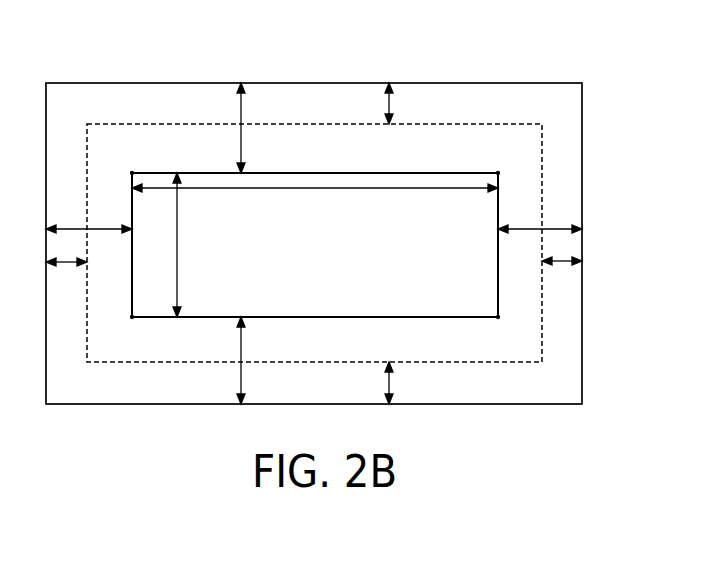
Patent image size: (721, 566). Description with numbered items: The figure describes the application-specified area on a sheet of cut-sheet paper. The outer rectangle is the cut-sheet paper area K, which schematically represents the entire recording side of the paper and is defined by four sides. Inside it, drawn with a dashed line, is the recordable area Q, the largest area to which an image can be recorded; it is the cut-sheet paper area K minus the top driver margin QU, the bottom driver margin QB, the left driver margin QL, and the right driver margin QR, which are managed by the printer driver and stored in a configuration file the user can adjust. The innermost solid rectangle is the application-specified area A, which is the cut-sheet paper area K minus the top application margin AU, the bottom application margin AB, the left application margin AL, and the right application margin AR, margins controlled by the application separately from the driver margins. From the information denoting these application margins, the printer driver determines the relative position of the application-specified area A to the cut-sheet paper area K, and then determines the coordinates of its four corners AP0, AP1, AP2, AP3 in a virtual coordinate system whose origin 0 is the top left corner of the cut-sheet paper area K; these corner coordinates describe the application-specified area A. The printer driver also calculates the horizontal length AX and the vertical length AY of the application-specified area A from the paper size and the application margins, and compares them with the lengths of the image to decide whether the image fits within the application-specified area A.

The cut-sheet paper area K is at (113, 82).
The recordable area Q is at (143, 123).
The application-specified area A is at (347, 172).
The origin 0 is at (46, 82).
The corner of the application-specified area AP0 is at (132, 172).
The corner of the application-specified area AP1 is at (498, 172).
The corner of the application-specified area AP2 is at (499, 318).
The corner of the application-specified area AP3 is at (132, 318).
The top application margin AU is at (242, 105).
The bottom application margin AB is at (243, 378).
The left application margin AL is at (72, 228).
The right application margin AR is at (562, 227).
The top driver margin QU is at (390, 105).
The bottom driver margin QB is at (390, 376).
The left driver margin QL is at (73, 265).
The right driver margin QR is at (560, 265).
The horizontal length of the application-specified area AX is at (320, 191).
The vertical length of the application-specified area AY is at (178, 247).